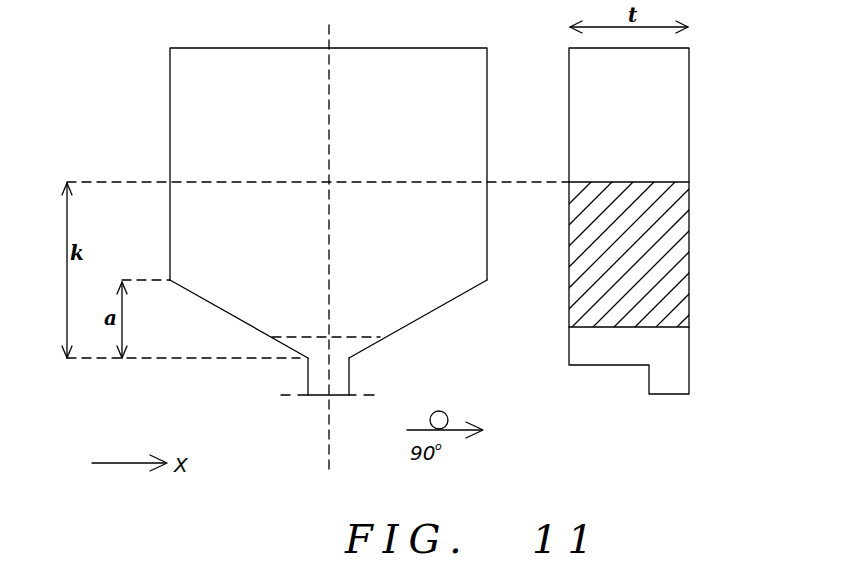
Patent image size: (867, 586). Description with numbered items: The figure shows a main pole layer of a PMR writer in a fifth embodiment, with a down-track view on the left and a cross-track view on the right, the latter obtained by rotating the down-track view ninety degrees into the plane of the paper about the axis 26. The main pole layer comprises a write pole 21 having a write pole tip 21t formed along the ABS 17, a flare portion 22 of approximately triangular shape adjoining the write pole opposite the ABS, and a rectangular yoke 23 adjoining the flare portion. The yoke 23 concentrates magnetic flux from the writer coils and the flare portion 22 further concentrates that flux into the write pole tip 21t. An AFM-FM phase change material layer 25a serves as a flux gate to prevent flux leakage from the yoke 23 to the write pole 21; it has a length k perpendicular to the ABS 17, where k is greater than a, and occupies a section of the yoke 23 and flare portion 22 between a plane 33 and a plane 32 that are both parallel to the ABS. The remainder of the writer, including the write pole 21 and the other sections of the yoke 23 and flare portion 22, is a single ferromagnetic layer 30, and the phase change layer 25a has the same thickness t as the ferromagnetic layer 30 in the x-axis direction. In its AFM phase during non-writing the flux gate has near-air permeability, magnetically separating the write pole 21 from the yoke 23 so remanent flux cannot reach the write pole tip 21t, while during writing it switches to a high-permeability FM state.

The axis 26 is at (328, 249).
The yoke 23 is at (190, 96).
The flare portion 22 is at (400, 303).
The write pole 21 is at (728, 363).
The write pole tip 21t is at (335, 396).
The plane 33 is at (170, 182).
The plane 32 is at (283, 338).
The ABS 17 is at (331, 397).
The ferromagnetic layer 30 is at (590, 66).
The AFM-FM phase change material layer 25a is at (580, 307).